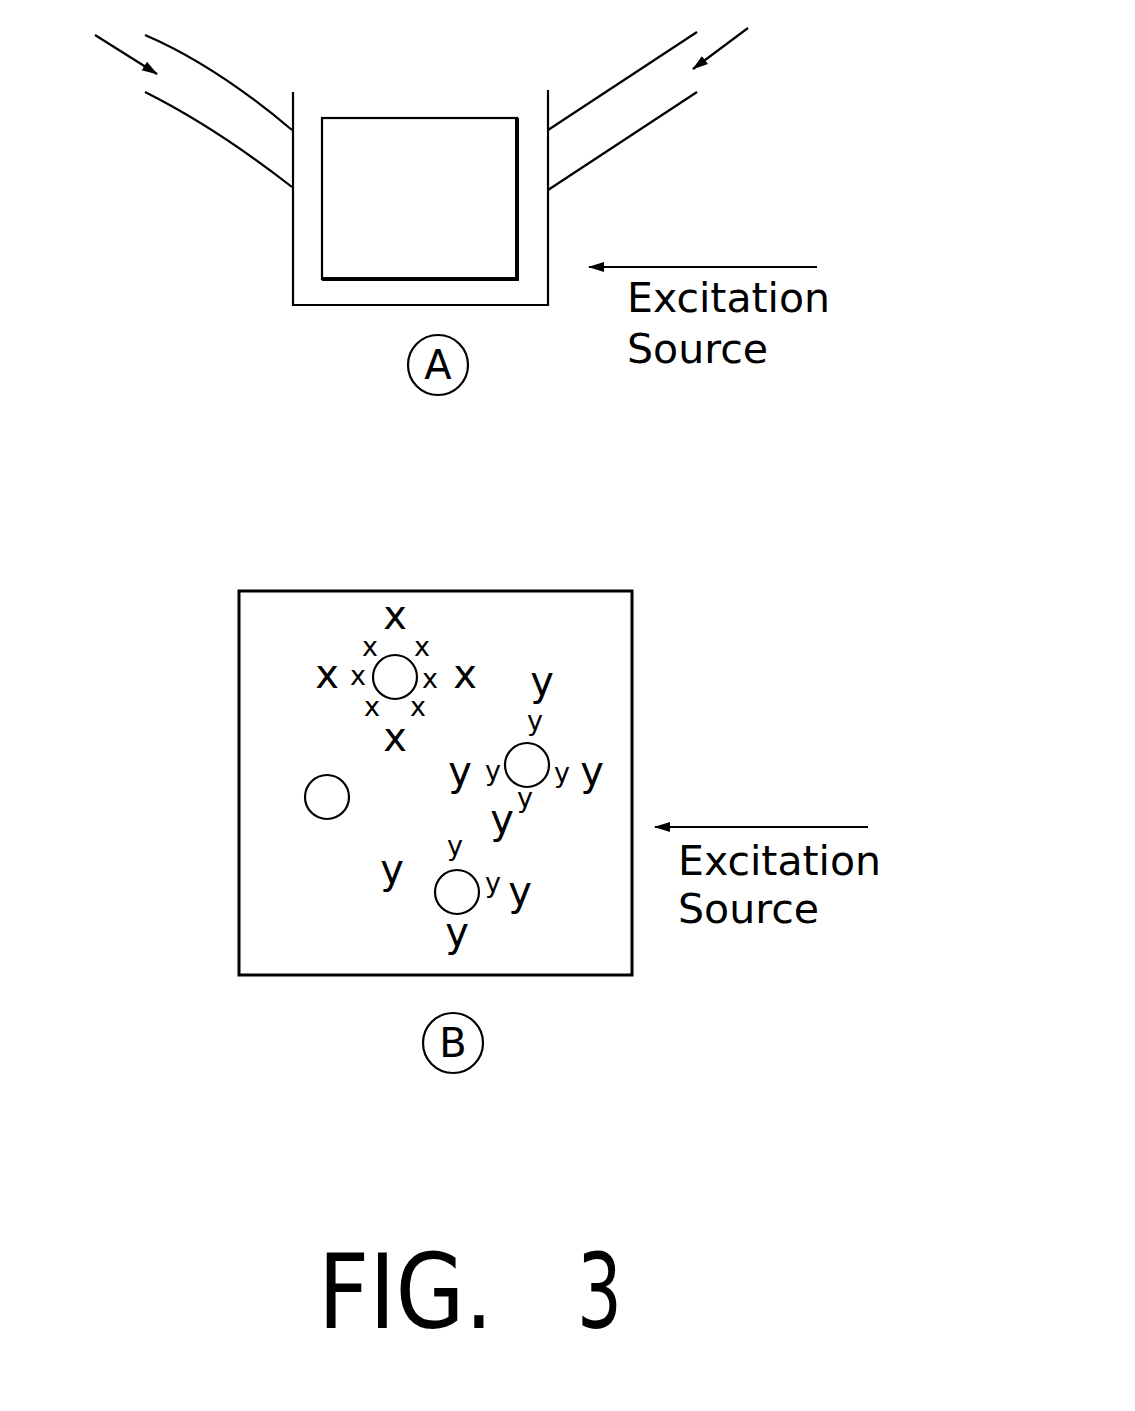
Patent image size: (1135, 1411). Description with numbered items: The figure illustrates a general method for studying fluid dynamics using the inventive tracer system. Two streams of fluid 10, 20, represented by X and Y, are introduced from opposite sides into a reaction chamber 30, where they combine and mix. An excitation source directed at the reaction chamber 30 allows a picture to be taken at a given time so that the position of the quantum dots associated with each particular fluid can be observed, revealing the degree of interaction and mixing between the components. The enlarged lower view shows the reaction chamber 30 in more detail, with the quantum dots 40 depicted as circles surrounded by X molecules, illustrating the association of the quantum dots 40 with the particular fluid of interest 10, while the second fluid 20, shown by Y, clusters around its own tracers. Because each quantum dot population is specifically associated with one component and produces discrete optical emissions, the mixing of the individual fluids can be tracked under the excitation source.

The stream of fluid 10 is at (198, 137).
The stream of fluid 20 is at (663, 129).
The reaction chamber 30 is at (335, 282).
The quantum dots 40 is at (284, 809).